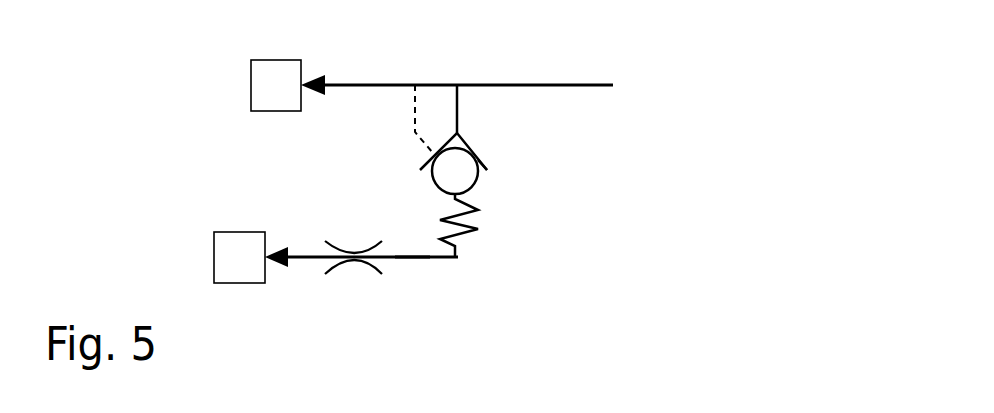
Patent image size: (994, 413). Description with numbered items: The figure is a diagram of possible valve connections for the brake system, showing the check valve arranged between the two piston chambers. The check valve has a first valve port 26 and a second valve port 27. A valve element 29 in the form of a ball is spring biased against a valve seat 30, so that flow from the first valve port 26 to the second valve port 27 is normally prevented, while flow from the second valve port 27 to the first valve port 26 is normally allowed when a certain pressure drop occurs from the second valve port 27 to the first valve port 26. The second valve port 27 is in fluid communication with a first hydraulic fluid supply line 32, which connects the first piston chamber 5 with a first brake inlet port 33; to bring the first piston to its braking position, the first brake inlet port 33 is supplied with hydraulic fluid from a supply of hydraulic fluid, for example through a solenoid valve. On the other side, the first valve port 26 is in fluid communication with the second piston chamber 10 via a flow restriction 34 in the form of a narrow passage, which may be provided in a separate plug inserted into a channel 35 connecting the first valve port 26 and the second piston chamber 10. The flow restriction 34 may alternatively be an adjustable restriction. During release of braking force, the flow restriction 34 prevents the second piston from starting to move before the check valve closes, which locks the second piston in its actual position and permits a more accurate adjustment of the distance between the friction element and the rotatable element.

The first piston chamber 5 is at (276, 85).
The second piston chamber 10 is at (239, 257).
The first valve port 26 is at (458, 257).
The second valve port 27 is at (462, 132).
The valve element 29 is at (457, 171).
The valve seat 30 is at (483, 163).
The first hydraulic fluid supply line 32 is at (502, 85).
The first brake inlet port 33 is at (613, 85).
The flow restriction 34 is at (355, 262).
The channel 35 is at (413, 257).